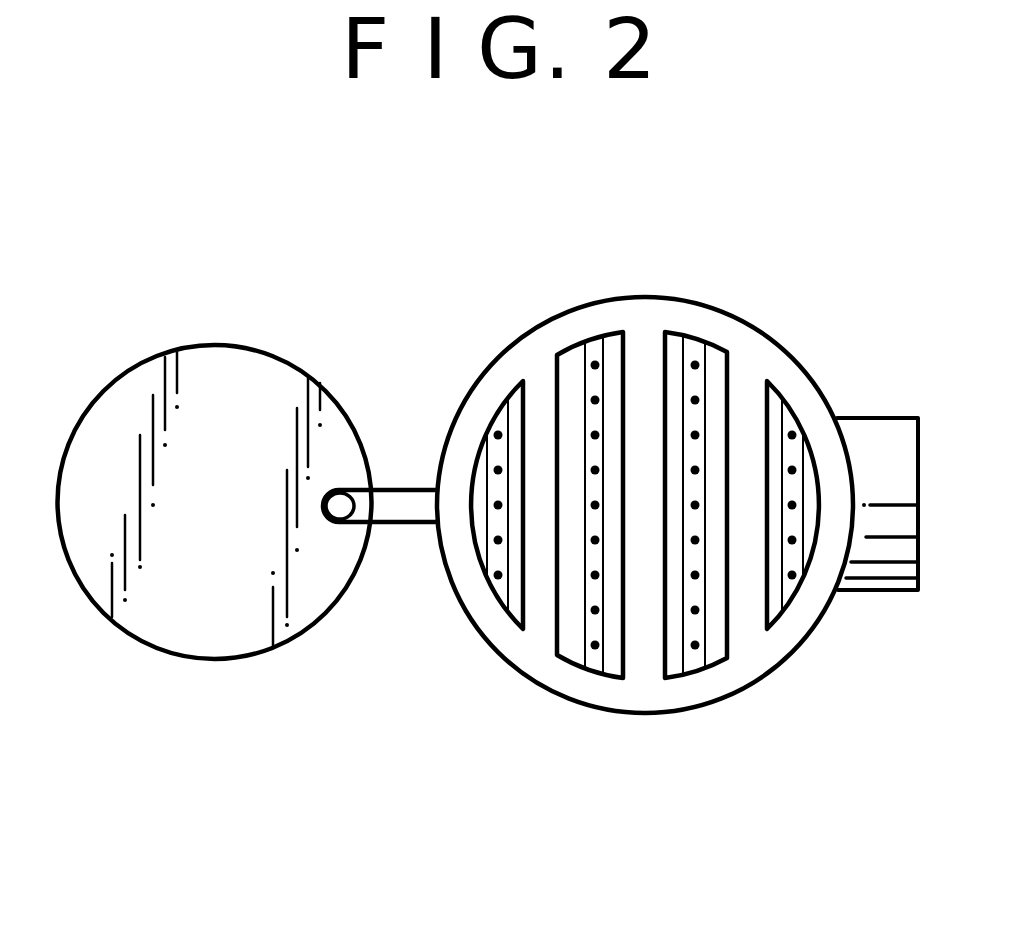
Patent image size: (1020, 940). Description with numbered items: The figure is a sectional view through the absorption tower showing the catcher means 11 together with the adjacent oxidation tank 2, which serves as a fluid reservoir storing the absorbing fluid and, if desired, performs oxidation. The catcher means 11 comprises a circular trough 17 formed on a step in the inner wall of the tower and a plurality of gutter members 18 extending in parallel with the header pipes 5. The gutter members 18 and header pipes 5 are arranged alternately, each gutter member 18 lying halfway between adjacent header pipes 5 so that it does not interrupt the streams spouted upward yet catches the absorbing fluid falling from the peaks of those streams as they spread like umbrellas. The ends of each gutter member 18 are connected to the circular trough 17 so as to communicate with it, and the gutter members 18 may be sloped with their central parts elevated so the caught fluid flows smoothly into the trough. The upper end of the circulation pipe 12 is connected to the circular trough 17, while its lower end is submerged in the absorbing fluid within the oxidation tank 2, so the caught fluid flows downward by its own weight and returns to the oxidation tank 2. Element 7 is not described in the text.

The oxidation tank 2 is at (188, 346).
The header pipes 5 is at (697, 647).
The electrodes 7 is at (497, 468).
The catcher means 11 is at (677, 490).
The circulation pipe 12 is at (399, 530).
The circular trough 17 is at (743, 656).
The gutter members 18 is at (749, 412).